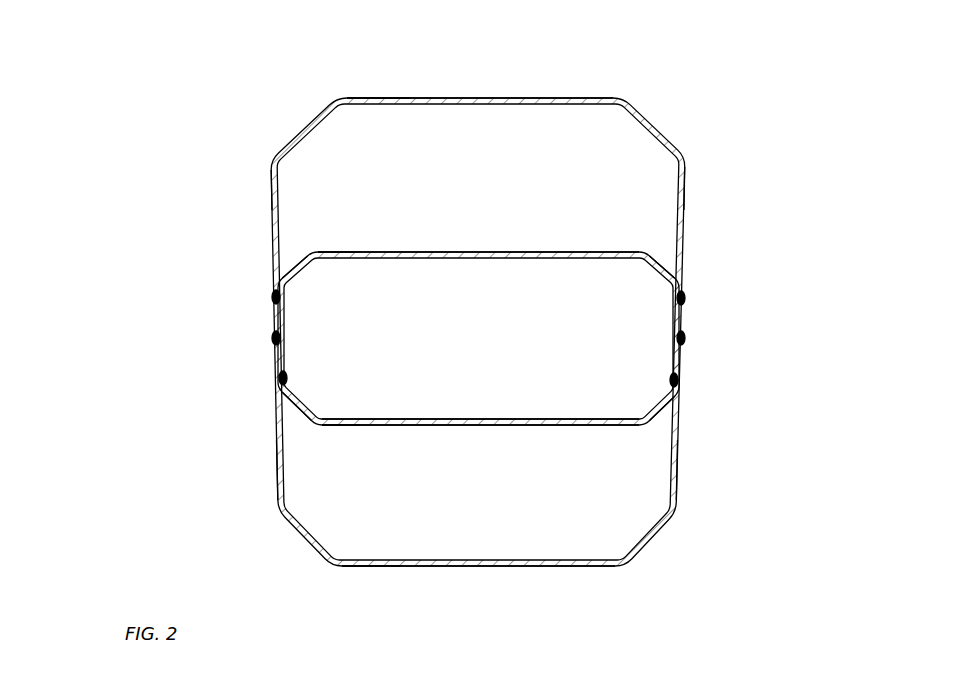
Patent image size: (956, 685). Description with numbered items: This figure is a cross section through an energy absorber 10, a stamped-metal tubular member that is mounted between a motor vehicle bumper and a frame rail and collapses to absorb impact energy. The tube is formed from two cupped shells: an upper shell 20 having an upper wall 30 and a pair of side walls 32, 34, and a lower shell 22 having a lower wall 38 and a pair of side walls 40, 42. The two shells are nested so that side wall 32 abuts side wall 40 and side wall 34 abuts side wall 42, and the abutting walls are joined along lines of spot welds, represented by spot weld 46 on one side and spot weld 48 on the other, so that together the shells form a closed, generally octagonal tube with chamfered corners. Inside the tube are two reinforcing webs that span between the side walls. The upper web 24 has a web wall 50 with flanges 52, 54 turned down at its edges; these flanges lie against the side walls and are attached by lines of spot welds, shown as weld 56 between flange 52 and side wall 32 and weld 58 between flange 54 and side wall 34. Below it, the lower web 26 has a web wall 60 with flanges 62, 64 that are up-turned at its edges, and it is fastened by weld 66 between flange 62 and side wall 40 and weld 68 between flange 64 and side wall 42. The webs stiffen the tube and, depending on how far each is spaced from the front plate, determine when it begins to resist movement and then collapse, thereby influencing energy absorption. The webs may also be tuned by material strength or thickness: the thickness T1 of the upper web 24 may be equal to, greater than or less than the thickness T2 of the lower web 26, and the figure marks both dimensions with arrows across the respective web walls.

The energy absorber 10 is at (286, 123).
The upper shell 20 is at (490, 98).
The lower shell 22 is at (490, 566).
The upper web 24 is at (478, 252).
The lower web 26 is at (447, 418).
The upper wall 30 is at (378, 98).
The side wall 32 is at (272, 205).
The side wall 34 is at (685, 205).
The lower wall 38 is at (365, 566).
The side wall 40 is at (278, 470).
The side wall 42 is at (677, 470).
The spot weld 46 is at (274, 338).
The spot weld 48 is at (682, 338).
The web wall 50 is at (340, 252).
The flange 52 is at (283, 300).
The flange 54 is at (678, 300).
The weld 56 is at (274, 297).
The weld 58 is at (682, 298).
The web wall 60 is at (492, 425).
The flange 62 is at (288, 378).
The flange 64 is at (670, 380).
The weld 66 is at (281, 378).
The weld 68 is at (676, 380).
The thickness of the upper web T1 is at (421, 266).
The thickness of the lower web T2 is at (397, 388).